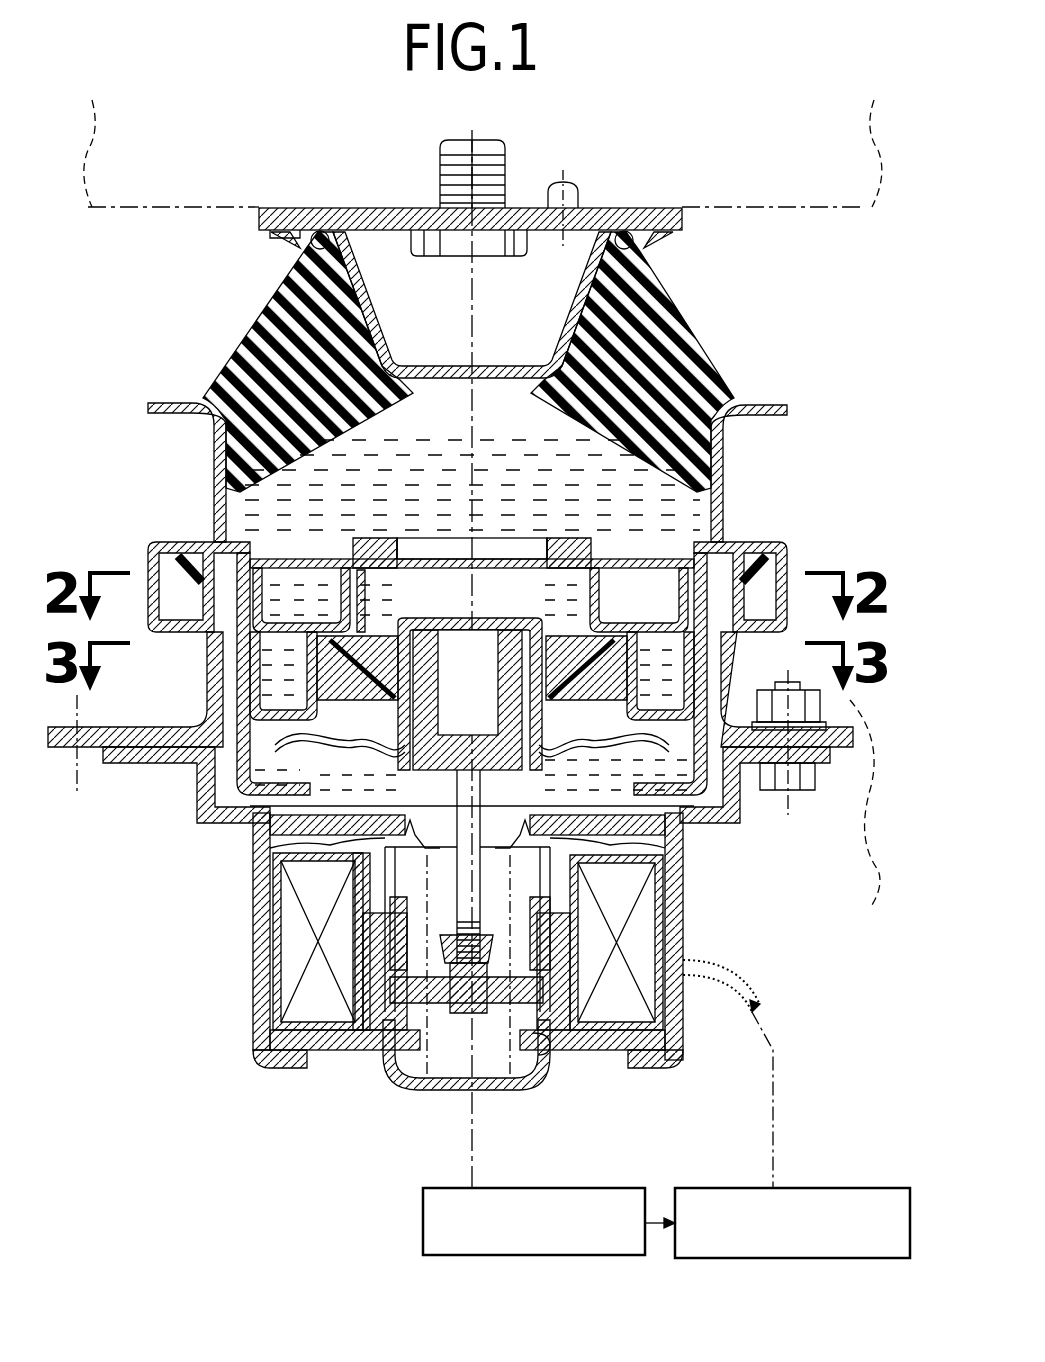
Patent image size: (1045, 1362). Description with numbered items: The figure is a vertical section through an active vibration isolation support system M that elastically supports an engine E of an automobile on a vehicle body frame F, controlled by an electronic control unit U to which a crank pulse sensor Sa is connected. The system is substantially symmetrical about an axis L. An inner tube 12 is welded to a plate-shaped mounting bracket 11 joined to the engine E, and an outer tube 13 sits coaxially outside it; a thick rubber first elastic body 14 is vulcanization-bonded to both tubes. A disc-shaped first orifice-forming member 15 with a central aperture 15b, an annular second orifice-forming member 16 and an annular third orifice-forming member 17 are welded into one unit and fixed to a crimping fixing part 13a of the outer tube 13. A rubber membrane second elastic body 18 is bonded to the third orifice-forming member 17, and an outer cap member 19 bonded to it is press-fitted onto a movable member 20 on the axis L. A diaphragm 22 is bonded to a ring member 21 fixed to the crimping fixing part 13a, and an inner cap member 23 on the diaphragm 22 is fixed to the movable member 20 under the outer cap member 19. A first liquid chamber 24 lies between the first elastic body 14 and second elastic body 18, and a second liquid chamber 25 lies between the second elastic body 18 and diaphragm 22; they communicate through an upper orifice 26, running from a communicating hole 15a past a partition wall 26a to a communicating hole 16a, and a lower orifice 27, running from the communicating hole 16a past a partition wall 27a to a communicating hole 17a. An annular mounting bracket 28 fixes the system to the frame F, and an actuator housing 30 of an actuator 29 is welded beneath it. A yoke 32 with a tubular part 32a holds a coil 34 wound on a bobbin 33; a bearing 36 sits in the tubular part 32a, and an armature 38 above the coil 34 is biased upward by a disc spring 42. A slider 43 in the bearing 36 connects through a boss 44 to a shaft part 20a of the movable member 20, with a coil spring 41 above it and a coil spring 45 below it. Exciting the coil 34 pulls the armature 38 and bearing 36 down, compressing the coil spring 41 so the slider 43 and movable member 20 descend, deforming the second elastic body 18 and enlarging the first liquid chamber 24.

The mounting bracket 11 is at (660, 208).
The inner tube 12 is at (372, 312).
The outer tube 13 is at (192, 458).
The crimping fixing part 13a is at (150, 545).
The first elastic body 14 is at (255, 345).
The first orifice-forming member 15 is at (372, 538).
The communicating hole 15a is at (632, 540).
The aperture 15b is at (450, 559).
The second orifice-forming member 16 is at (272, 590).
The communicating hole 16a is at (639, 600).
The third orifice-forming member 17 is at (278, 628).
The communicating hole 17a is at (700, 660).
The second elastic body 18 is at (360, 668).
The outer cap member 19 is at (470, 620).
The movable member 20 is at (398, 770).
The shaft part 20a is at (460, 857).
The ring member 21 is at (150, 592).
The diaphragm 22 is at (362, 748).
The inner cap member 23 is at (398, 704).
The first liquid chamber 24 is at (472, 485).
The second liquid chamber 25 is at (546, 700).
The upper orifice 26 is at (280, 580).
The partition wall 26a is at (605, 545).
The lower orifice 27 is at (275, 655).
The partition wall 27a is at (735, 690).
The mounting bracket 28 is at (140, 735).
The actuator 29 is at (212, 930).
The actuator housing 30 is at (255, 890).
The yoke 32 is at (455, 1093).
The tubular part 32a is at (590, 950).
The bobbin 33 is at (285, 1020).
The coil 34 is at (285, 950).
The bearing 36 is at (500, 830).
The armature 38 is at (605, 800).
The coil spring 41 is at (505, 840).
The disc spring 42 is at (265, 848).
The slider 43 is at (355, 930).
The boss 44 is at (480, 1003).
The coil spring 45 is at (545, 1068).
The engine E is at (773, 215).
The active vibration isolation support system M is at (778, 485).
The axis L is at (475, 265).
The vehicle body frame F is at (816, 787).
The electronic control unit U is at (800, 1188).
The crank pulse sensor Sa is at (423, 1212).